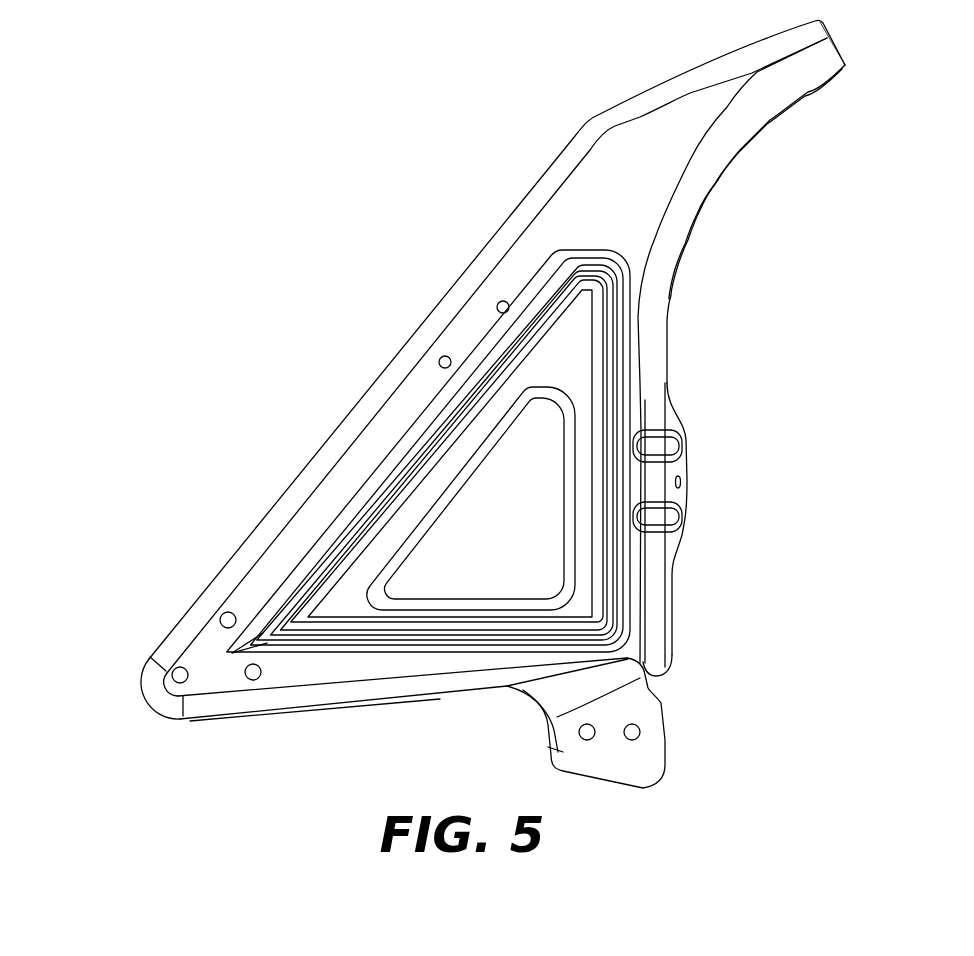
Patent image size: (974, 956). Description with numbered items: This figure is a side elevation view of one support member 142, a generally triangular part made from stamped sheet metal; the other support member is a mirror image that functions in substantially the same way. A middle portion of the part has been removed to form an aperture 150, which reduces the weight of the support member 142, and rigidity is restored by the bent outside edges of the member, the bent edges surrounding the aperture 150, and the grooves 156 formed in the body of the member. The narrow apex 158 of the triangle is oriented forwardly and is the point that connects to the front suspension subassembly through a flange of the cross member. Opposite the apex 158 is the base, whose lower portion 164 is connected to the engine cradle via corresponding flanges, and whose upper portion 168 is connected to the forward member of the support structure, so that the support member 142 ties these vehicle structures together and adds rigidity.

The support member 142 is at (248, 269).
The aperture 150 is at (517, 522).
The grooves 156 is at (610, 417).
The apex 158 is at (210, 531).
The lower portion 164 is at (703, 748).
The upper portion 168 is at (843, 92).